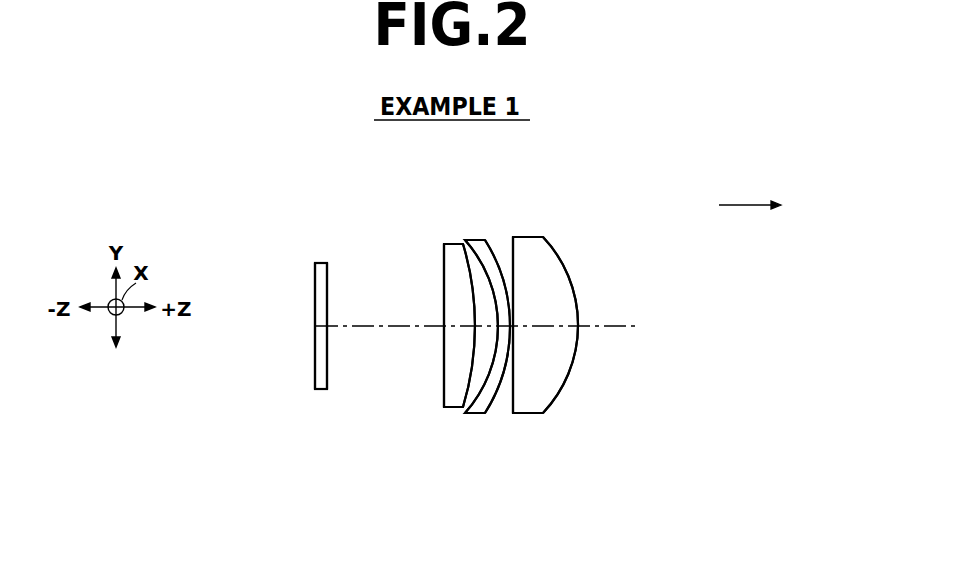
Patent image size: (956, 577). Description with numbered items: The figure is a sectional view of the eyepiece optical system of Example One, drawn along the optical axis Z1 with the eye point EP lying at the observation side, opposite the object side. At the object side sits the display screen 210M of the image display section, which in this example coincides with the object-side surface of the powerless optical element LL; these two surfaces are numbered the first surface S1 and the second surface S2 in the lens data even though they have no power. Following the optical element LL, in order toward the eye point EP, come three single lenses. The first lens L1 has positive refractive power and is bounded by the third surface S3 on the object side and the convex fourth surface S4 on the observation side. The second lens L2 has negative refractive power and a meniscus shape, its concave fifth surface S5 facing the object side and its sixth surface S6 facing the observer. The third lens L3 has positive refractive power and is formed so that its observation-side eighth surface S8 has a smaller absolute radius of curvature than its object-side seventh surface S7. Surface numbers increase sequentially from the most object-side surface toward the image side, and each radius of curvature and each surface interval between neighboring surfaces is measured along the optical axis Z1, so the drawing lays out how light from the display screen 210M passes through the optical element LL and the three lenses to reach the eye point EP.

The display screen 210M is at (311, 276).
The optical element LL is at (321, 263).
The first lens L1 is at (452, 250).
The second lens L2 is at (473, 250).
The third lens L3 is at (528, 247).
The first surface S1 is at (315, 367).
The second surface S2 is at (328, 370).
The third surface S3 is at (443, 383).
The fourth surface S4 is at (462, 386).
The fifth surface S5 is at (472, 398).
The sixth surface S6 is at (487, 403).
The seventh surface S7 is at (512, 388).
The eighth surface S8 is at (563, 392).
The optical axis Z1 is at (618, 323).
The eye point EP is at (750, 193).